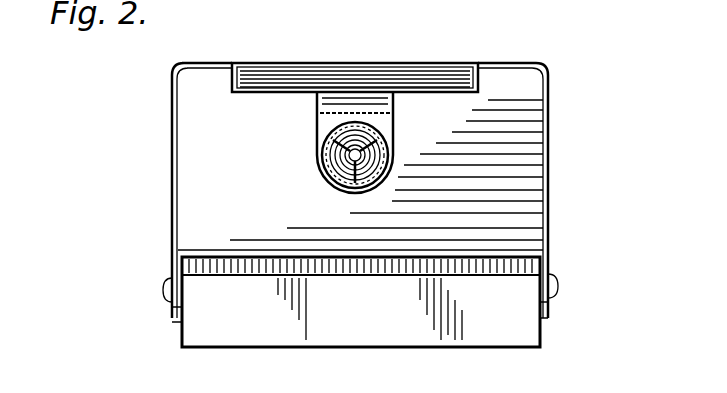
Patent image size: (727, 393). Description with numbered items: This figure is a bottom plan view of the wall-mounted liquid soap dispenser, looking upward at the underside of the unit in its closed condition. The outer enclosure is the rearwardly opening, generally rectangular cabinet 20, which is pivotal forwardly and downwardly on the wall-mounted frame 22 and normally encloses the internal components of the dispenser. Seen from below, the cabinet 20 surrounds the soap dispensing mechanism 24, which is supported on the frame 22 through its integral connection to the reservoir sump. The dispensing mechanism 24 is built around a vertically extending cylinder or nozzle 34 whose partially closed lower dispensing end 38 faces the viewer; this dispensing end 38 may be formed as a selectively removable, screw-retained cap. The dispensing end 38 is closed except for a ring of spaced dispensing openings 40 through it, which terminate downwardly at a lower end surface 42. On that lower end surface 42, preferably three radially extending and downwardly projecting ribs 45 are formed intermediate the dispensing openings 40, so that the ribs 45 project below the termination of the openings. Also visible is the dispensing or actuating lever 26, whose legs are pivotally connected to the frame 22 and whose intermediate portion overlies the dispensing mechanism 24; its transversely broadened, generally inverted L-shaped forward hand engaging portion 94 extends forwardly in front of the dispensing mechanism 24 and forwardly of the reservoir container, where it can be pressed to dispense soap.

The cabinet 20 is at (170, 173).
The wall-mounted frame 22 is at (512, 327).
The soap dispensing mechanism 24 is at (355, 130).
The dispensing or actuating lever 26 is at (297, 62).
The cylinder or nozzle 34 is at (326, 178).
The lower dispensing end 38 is at (338, 188).
The dispensing openings 40 is at (327, 166).
The lower end surface 42 is at (331, 136).
The ribs 45 is at (386, 138).
The forward hand engaging portion 94 is at (455, 70).